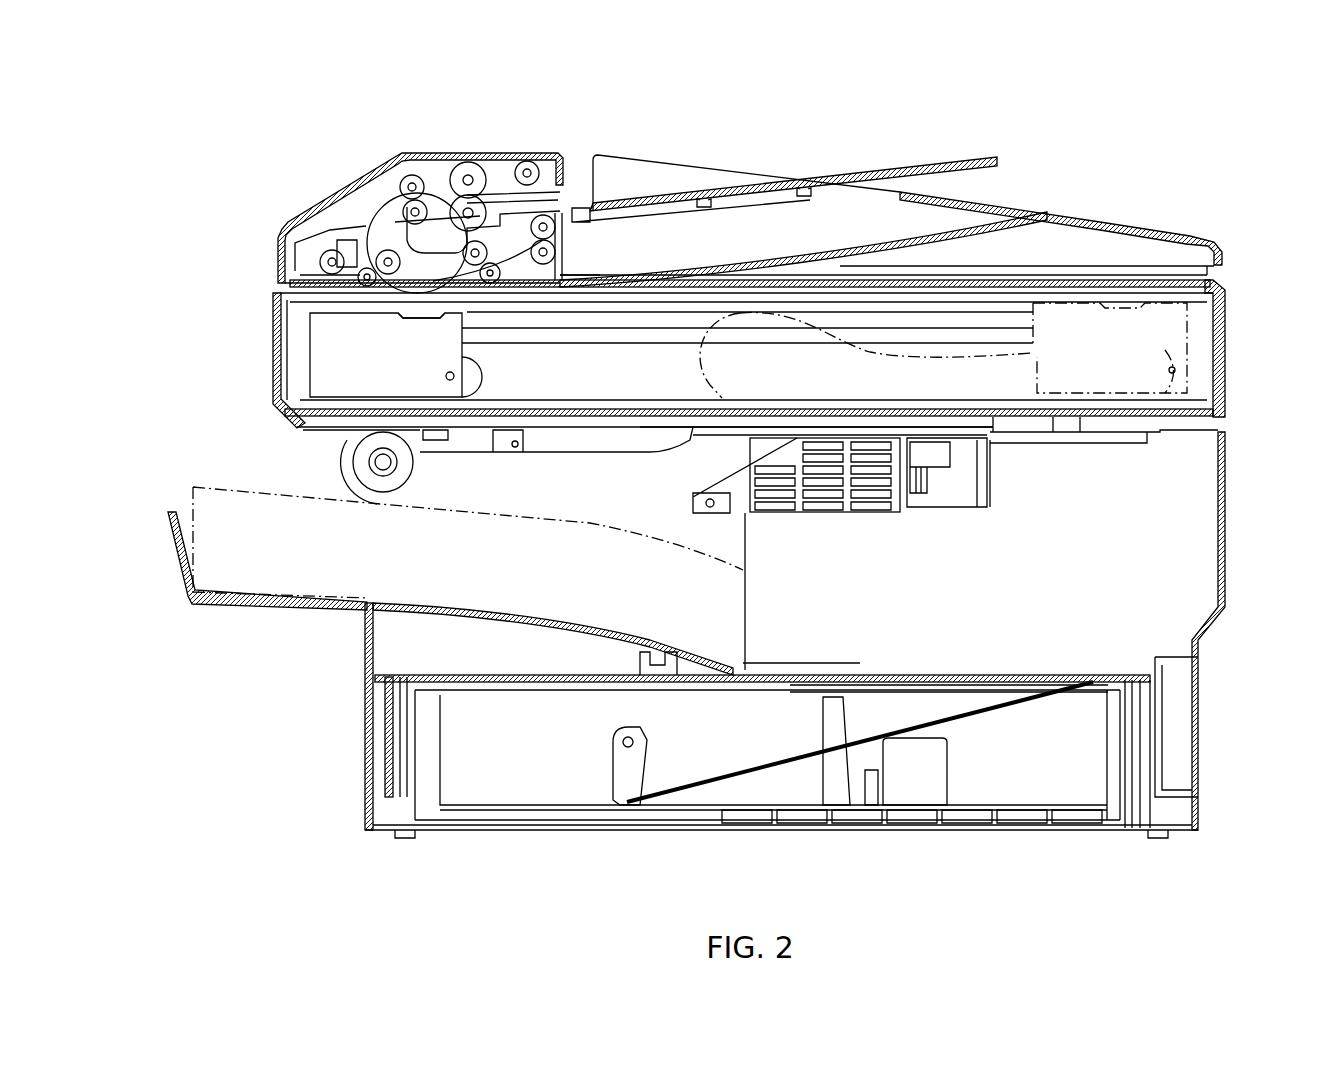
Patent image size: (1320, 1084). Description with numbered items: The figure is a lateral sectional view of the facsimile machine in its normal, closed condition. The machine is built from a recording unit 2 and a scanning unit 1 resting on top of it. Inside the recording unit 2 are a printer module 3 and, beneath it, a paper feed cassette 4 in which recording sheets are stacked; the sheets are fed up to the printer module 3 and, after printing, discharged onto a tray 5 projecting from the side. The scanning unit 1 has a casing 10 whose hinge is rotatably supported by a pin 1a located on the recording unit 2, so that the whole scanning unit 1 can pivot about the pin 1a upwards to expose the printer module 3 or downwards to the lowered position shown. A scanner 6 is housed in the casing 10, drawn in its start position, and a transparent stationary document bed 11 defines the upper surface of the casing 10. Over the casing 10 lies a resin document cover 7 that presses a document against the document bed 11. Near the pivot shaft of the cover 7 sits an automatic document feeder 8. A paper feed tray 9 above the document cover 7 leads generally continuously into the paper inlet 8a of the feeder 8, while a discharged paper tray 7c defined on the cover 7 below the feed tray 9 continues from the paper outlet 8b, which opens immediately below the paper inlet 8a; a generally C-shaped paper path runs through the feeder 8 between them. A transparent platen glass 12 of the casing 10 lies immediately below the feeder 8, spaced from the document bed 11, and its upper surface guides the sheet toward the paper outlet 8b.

The scanning unit 1 is at (1173, 179).
The pin 1a is at (388, 462).
The recording unit 2 is at (1243, 518).
The printer module 3 is at (995, 587).
The paper feed cassette 4 is at (530, 749).
The tray 5 is at (278, 603).
The scanner 6 is at (352, 367).
The document cover 7 is at (1052, 205).
The discharged paper tray 7c is at (778, 265).
The automatic document feeder 8 is at (437, 145).
The paper inlet 8a is at (565, 191).
The paper outlet 8b is at (566, 242).
The paper feed tray 9 is at (952, 162).
The casing 10 is at (1225, 340).
The document bed 11 is at (1062, 282).
The platen glass 12 is at (433, 308).